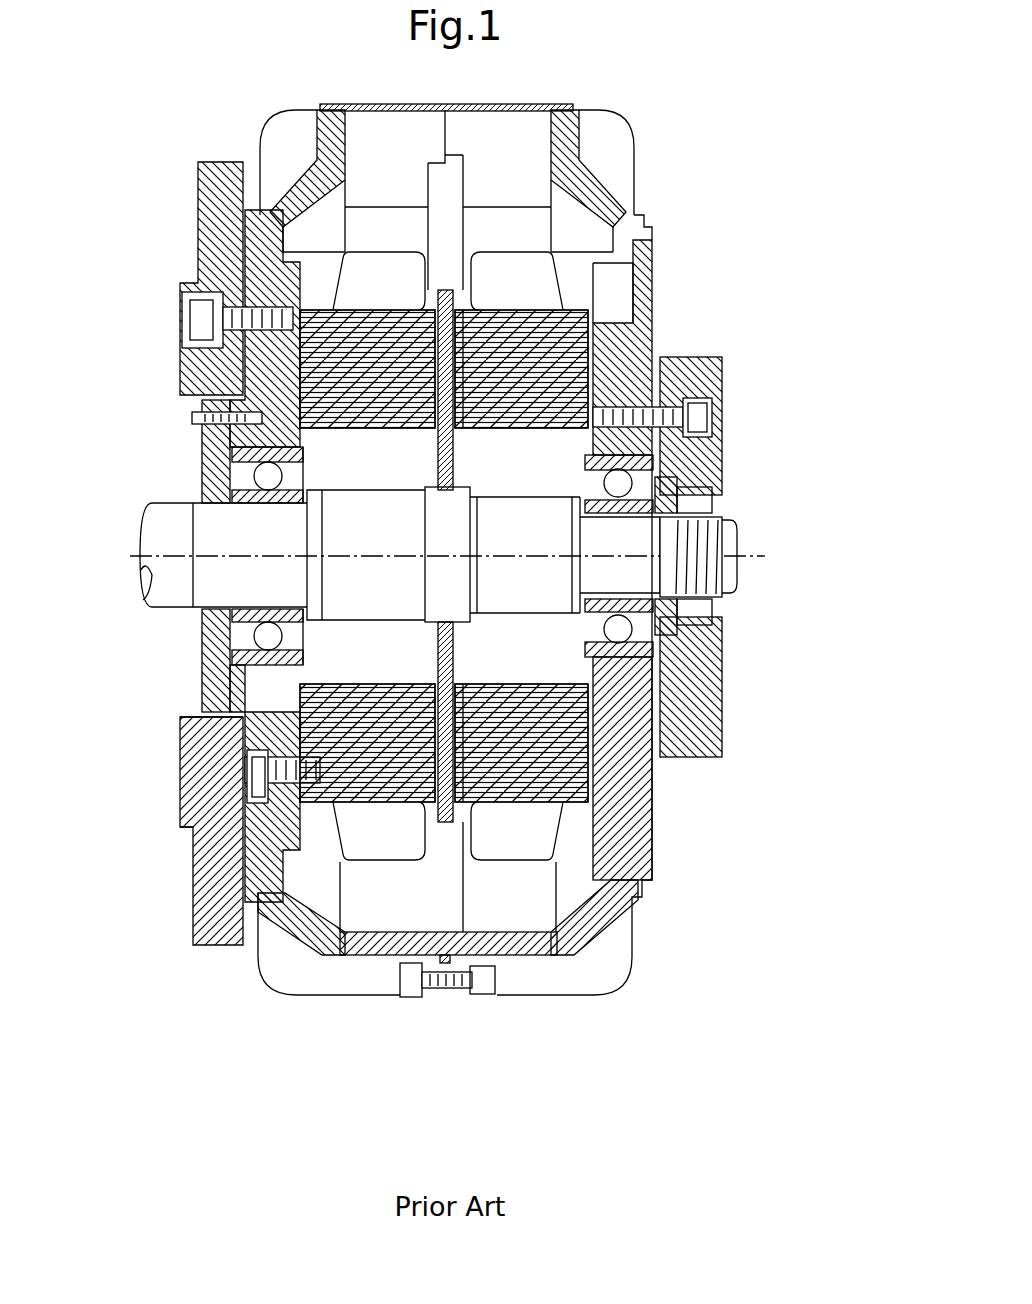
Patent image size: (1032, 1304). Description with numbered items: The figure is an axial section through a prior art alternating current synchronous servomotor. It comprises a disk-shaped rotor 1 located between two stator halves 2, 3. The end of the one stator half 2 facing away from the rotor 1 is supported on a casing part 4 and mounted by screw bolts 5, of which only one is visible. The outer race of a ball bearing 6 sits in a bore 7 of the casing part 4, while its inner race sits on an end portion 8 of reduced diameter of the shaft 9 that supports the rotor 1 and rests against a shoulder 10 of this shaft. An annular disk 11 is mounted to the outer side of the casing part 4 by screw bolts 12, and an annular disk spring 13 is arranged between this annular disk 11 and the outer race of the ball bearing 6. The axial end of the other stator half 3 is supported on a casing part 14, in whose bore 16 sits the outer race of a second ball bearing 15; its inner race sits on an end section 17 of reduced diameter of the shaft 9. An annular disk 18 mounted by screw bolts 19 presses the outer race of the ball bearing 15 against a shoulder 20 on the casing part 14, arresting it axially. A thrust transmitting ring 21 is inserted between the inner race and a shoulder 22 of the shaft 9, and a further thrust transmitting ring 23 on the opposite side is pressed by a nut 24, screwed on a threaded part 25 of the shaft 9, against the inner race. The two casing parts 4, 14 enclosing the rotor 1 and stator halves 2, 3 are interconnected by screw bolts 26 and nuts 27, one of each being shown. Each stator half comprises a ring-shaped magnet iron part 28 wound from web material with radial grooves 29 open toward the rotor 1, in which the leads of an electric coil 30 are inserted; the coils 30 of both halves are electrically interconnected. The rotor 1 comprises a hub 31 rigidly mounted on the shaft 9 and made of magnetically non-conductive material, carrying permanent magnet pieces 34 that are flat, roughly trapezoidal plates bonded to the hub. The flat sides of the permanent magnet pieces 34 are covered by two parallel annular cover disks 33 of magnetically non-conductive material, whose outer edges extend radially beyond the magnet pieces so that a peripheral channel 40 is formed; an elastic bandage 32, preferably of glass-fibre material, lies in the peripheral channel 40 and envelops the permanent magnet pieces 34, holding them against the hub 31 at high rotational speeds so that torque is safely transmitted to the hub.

The disk-shaped rotor 1 is at (443, 830).
The stator half 2 is at (322, 803).
The stator half 3 is at (568, 808).
The casing part 4 is at (212, 717).
The screw bolts 5 is at (215, 800).
The ball bearing 6 is at (245, 475).
The bore 7 is at (205, 660).
The end portion of reduced diameter 8 is at (200, 537).
The shaft 9 is at (372, 540).
The shoulder 10 is at (230, 567).
The annular disk 11 is at (203, 680).
The screw bolts 12 is at (195, 405).
The annular disk spring 13 is at (205, 455).
The casing part 14 is at (648, 833).
The second ball bearing 15 is at (648, 470).
The bore 16 is at (655, 450).
The end section of reduced diameter 17 is at (640, 537).
The annular disk 18 is at (708, 365).
The screw bolts 19 is at (702, 420).
The shoulder 20 is at (578, 463).
The thrust transmitting ring 21 is at (698, 617).
The shoulder 22 is at (753, 555).
The thrust transmitting ring 23 is at (720, 673).
The nut 24 is at (712, 610).
The threaded part 25 is at (707, 580).
The screw bolts 26 is at (480, 993).
The nuts 27 is at (397, 990).
The ring-shaped magnet iron part 28 is at (300, 262).
The radial grooves 29 is at (590, 330).
The electric coil 30 is at (345, 258).
The hub 31 is at (473, 487).
The elastic bandage 32 is at (445, 255).
The cover disks 33 is at (440, 300).
The permanent magnet pieces 34 is at (448, 425).
The peripheral channel 40 is at (300, 778).